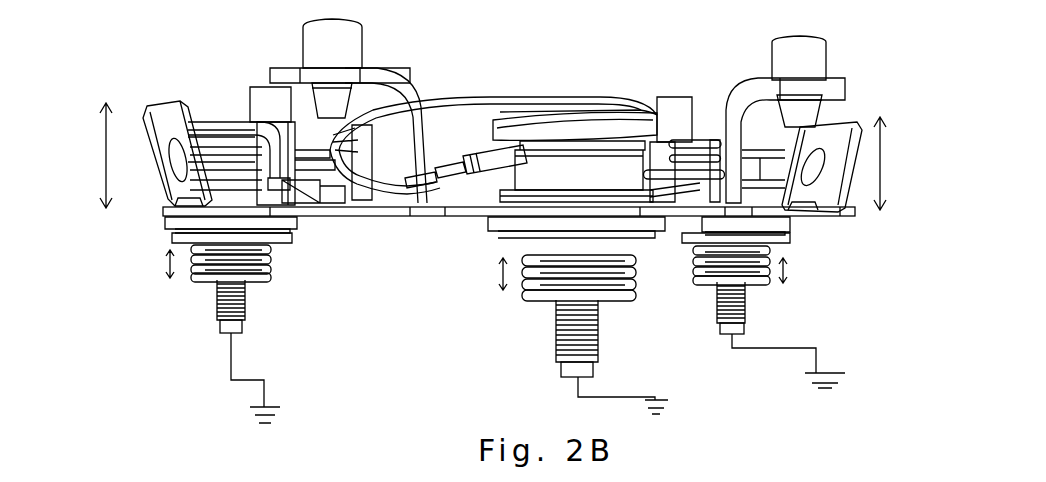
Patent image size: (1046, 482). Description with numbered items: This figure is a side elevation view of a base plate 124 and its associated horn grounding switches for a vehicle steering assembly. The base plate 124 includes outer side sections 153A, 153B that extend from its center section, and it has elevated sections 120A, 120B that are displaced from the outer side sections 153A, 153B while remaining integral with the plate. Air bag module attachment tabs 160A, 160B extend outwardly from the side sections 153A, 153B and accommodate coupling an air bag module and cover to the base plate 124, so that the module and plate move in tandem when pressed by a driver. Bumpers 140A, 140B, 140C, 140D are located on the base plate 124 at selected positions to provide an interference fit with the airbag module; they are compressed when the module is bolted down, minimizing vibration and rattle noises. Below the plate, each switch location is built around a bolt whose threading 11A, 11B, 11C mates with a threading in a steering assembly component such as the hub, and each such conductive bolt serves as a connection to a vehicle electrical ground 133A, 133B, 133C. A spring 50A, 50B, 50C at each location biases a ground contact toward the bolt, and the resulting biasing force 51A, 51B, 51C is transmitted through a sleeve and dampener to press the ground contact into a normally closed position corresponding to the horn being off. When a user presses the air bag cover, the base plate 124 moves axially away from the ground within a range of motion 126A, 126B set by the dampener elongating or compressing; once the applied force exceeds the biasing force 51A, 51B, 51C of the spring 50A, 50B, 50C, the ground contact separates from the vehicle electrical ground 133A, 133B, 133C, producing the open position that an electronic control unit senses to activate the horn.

The threading 11A is at (245, 306).
The threading 11B is at (598, 342).
The threading 11C is at (747, 305).
The spring 50A is at (270, 278).
The spring 50B is at (630, 305).
The spring 50C is at (765, 285).
The biasing force 51A is at (143, 264).
The biasing force 51B is at (480, 274).
The biasing force 51C is at (800, 270).
The elevated section 120A is at (380, 70).
The elevated section 120B is at (845, 82).
The base plate 124 is at (465, 216).
The range of motion 126A is at (75, 155).
The range of motion 126B is at (913, 163).
The vehicle electrical ground 133A is at (254, 399).
The vehicle electrical ground 133B is at (638, 412).
The vehicle electrical ground 133C is at (812, 374).
The bumper 140A is at (270, 104).
The bumper 140B is at (340, 68).
The bumper 140C is at (684, 149).
The bumper 140D is at (799, 81).
The outer side section 153A is at (300, 214).
The outer side section 153B is at (838, 217).
The air bag module attachment tab 160A is at (177, 153).
The air bag module attachment tab 160B is at (822, 167).